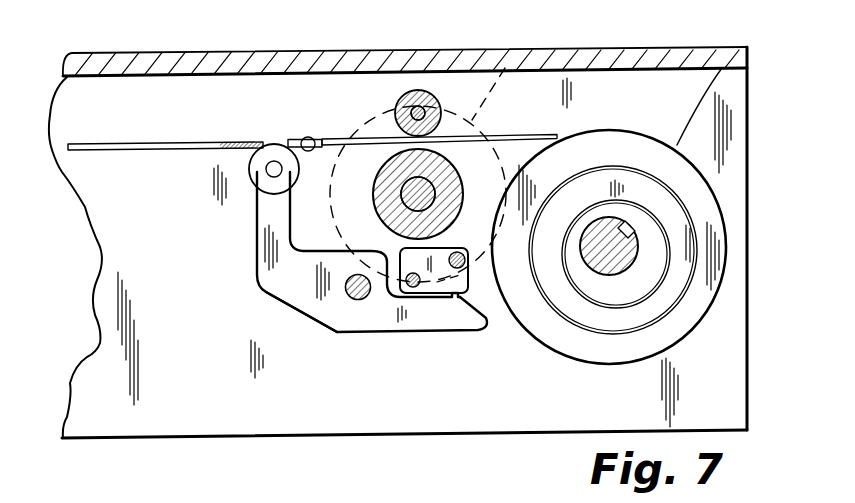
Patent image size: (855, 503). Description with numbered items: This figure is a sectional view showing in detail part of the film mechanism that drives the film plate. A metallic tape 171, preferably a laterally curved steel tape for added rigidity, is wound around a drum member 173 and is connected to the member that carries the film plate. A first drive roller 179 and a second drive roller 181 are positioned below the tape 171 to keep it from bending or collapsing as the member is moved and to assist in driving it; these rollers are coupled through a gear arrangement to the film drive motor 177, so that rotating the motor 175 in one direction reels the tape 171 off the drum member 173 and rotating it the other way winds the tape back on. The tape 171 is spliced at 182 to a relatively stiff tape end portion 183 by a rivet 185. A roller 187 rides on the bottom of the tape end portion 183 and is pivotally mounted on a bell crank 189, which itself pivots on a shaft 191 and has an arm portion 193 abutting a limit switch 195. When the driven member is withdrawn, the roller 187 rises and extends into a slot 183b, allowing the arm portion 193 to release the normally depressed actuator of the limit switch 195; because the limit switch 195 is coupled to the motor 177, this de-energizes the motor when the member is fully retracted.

The metallic tape 171 is at (513, 150).
The drum member 173 is at (743, 20).
The motor 175 is at (448, 150).
The film drive motor 177 is at (506, 68).
The first drive roller 179 is at (396, 100).
The second drive roller 181 is at (374, 198).
The splice 182 is at (318, 140).
The tape end portion 183 is at (100, 146).
The slot 183b is at (257, 146).
The rivet 185 is at (322, 140).
The roller 187 is at (228, 145).
The bell crank 189 is at (302, 290).
The shaft 191 is at (352, 300).
The arm portion 193 is at (448, 318).
The limit switch 195 is at (469, 283).